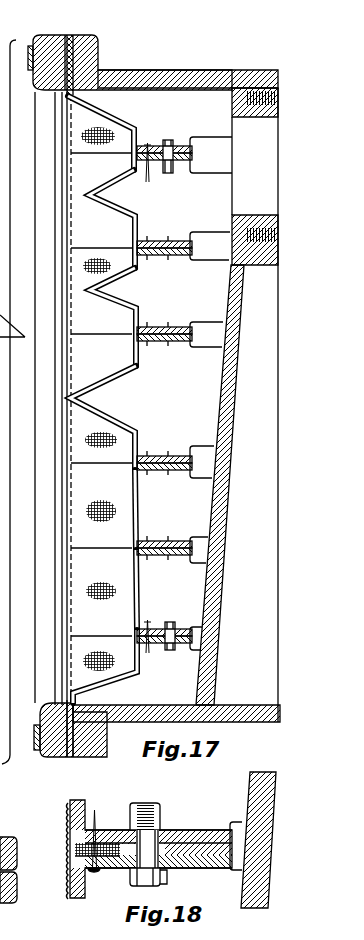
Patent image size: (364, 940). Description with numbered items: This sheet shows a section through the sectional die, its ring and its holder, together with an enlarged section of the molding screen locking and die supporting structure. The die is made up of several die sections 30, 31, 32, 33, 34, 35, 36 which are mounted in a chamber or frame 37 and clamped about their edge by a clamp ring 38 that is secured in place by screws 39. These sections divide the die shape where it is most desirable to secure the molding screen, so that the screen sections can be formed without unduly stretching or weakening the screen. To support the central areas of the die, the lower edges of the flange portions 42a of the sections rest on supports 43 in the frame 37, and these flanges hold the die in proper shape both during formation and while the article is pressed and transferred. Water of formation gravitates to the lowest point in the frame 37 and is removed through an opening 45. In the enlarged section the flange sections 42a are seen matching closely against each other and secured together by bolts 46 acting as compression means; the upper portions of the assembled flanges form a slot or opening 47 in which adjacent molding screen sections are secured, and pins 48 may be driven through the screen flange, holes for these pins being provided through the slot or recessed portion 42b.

In FIG. 17, the die section 30 is at (129, 120).
In FIG. 17, the die section 31 is at (139, 211).
In FIG. 17, the die section 32 is at (139, 304).
In FIG. 17, the die section 33 is at (138, 426).
In FIG. 17, the die section 34 is at (140, 518).
In FIG. 17, the die section 35 is at (141, 596).
In FIG. 17, the die section 36 is at (140, 675).
In FIG. 17, the chamber or frame 37 is at (183, 71).
In FIG. 17, the clamp ring 38 is at (50, 35).
In FIG. 17, the screws 39 is at (31, 50).
In FIG. 17, the flange portions 42a is at (178, 325).
In FIG. 18, the flange portions 42a is at (186, 830).
In FIG. 17, the slot or recessed portion 42b is at (145, 346).
In FIG. 17, the supports 43 is at (207, 332).
In FIG. 17, the opening 45 is at (254, 185).
In FIG. 17, the bolts 46 is at (171, 144).
In FIG. 18, the bolts 46 is at (155, 874).
In FIG. 18, the slot or opening 47 is at (115, 833).
In FIG. 17, the pins 48 is at (148, 143).
In FIG. 18, the pins 48 is at (95, 871).